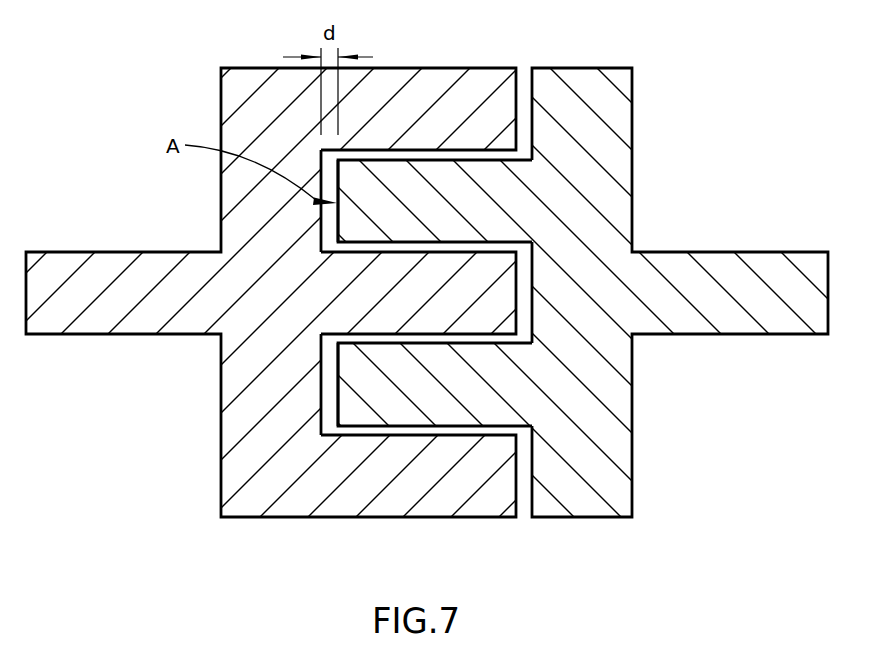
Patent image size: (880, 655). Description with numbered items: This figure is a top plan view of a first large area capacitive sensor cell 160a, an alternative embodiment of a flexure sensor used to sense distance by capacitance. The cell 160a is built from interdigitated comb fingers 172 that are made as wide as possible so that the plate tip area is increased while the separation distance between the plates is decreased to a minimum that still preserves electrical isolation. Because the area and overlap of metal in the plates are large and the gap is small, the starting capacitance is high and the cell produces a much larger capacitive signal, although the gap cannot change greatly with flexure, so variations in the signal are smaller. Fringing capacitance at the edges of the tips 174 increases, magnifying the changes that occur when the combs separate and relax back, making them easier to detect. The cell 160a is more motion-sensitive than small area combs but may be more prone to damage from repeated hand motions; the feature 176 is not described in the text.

The first large area capacitive sensor cell 160a is at (765, 87).
The comb fingers 172 is at (411, 215).
The tips 174 is at (338, 177).
The wall of recess 176 is at (318, 163).